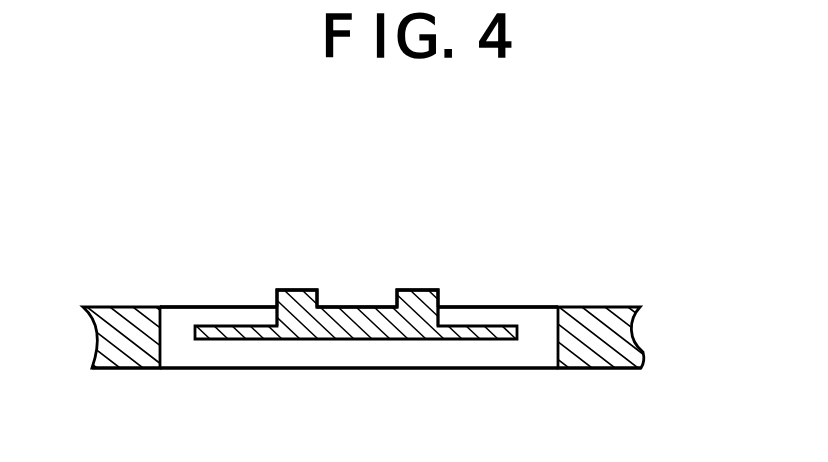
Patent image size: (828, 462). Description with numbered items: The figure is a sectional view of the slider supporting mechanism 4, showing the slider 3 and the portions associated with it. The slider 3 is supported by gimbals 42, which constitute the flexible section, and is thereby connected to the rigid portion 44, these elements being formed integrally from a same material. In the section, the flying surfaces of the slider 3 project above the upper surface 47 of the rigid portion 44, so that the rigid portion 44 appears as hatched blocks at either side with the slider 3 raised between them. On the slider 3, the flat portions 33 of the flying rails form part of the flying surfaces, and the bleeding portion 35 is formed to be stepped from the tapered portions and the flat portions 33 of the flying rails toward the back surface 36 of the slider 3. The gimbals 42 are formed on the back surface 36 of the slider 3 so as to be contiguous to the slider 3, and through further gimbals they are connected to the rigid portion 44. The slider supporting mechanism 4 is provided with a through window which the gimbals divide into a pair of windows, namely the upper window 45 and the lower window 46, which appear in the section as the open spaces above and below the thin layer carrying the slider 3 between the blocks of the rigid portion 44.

The slider 3 is at (297, 286).
The slider supporting mechanism 4 is at (608, 292).
The flat portions 33 is at (418, 290).
The bleeding portion 35 is at (347, 307).
The back surface 36 is at (415, 340).
The gimbals 42 is at (495, 307).
The rigid portion 44 is at (610, 353).
The upper window 45 is at (233, 307).
The lower window 46 is at (240, 353).
The upper surface 47 is at (113, 307).